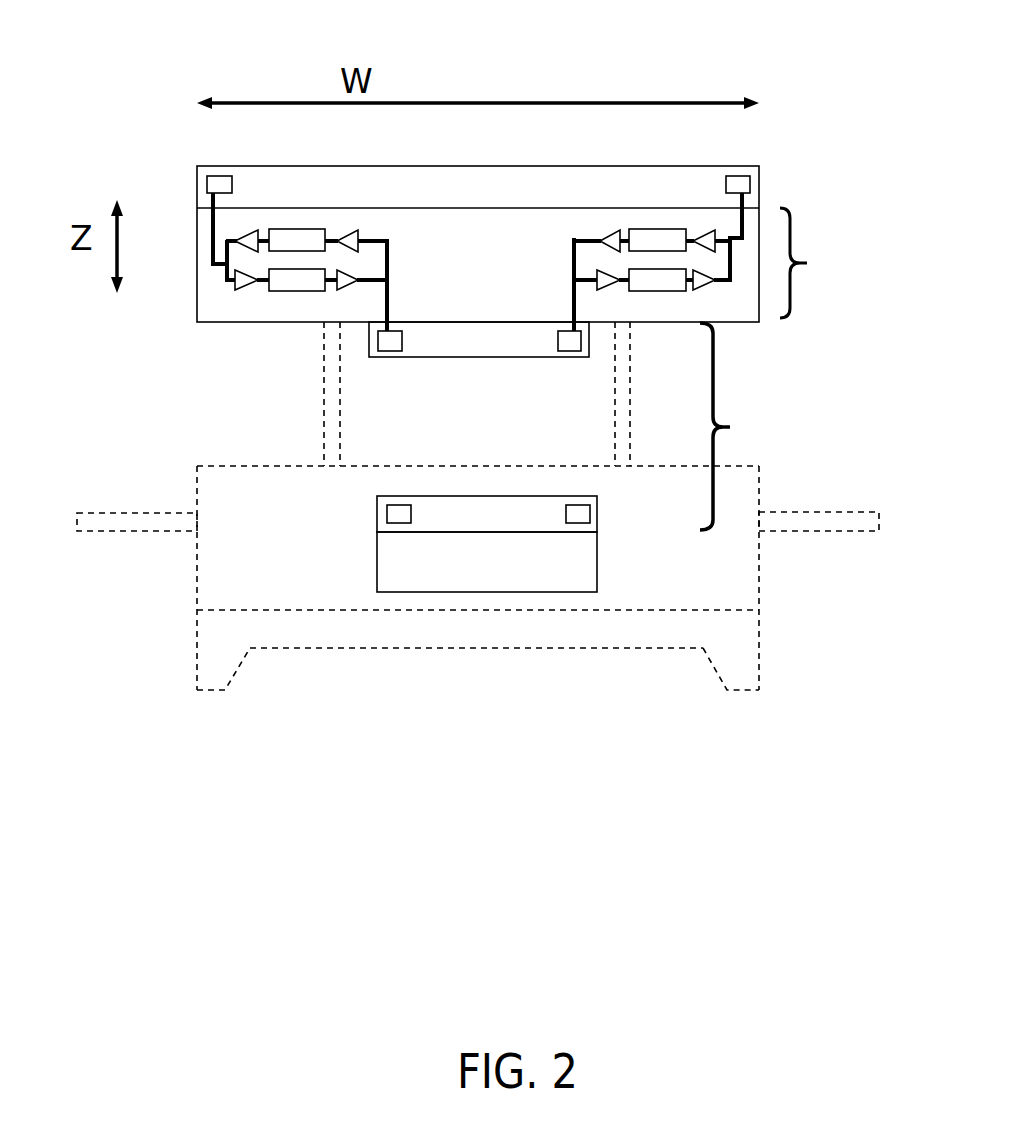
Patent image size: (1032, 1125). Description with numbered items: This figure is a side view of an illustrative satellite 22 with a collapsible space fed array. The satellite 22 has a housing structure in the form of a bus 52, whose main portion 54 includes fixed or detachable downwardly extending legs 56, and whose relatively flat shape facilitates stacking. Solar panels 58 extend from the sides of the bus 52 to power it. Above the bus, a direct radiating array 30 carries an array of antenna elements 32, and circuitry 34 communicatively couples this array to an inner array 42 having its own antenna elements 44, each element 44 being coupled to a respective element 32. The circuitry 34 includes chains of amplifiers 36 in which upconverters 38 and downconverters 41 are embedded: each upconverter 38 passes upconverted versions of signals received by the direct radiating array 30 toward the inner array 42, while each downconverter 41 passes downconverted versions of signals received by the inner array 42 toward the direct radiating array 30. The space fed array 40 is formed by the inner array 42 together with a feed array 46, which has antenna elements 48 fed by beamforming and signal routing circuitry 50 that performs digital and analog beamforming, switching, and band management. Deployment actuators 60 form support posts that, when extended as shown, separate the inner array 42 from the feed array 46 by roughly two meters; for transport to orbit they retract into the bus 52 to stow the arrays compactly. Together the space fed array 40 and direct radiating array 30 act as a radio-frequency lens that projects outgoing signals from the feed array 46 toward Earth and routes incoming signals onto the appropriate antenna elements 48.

The satellite 22 is at (668, 65).
The direct radiating array 30 is at (635, 166).
The antenna elements 32 is at (220, 175).
The circuitry 34 is at (819, 263).
The amplifiers 36 is at (252, 232).
The upconverters 38 is at (312, 291).
The space fed array 40 is at (737, 426).
The downconverters 41 is at (300, 229).
The inner array 42 is at (437, 357).
The antenna elements 44 is at (558, 339).
The feed array 46 is at (375, 510).
The antenna elements 48 is at (566, 510).
The beamforming and signal routing circuitry 50 is at (597, 550).
The bus 52 is at (782, 457).
The main portion 54 is at (453, 648).
The legs 56 is at (213, 673).
The solar panels 58 is at (95, 532).
The deployment actuators 60 is at (340, 380).